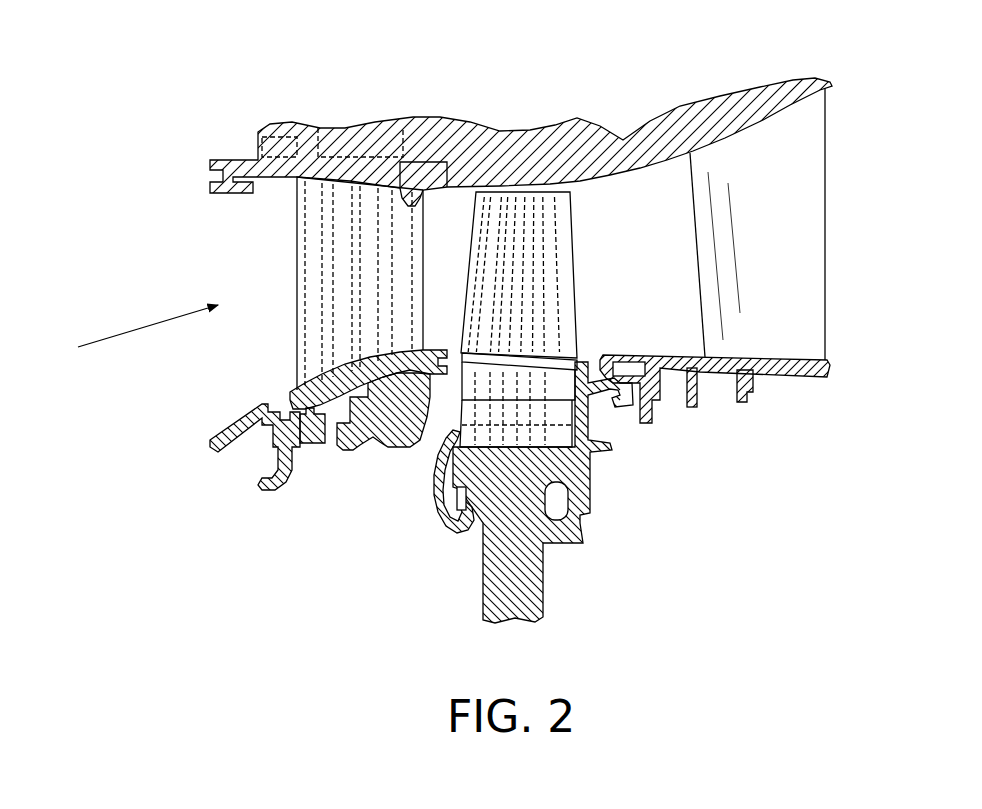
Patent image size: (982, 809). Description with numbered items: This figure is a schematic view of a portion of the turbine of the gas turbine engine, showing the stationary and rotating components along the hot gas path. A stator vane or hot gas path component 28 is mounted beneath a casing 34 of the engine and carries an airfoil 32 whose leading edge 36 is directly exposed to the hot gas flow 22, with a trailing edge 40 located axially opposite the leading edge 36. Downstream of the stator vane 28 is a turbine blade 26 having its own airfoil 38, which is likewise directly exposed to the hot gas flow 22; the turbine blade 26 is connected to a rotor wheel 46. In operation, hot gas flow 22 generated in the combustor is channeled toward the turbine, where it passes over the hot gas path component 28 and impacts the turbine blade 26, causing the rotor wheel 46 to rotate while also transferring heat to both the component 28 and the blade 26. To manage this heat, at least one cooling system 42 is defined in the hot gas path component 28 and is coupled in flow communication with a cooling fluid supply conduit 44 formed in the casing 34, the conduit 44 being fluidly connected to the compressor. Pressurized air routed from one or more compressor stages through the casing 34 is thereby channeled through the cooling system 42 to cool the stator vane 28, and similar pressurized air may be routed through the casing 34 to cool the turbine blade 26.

The hot gas flow 22 is at (127, 330).
The turbine blade 26 is at (586, 354).
The stator vane or hot gas path component 28 is at (292, 385).
The airfoil 32 is at (426, 196).
The casing 34 is at (340, 127).
The leading edge 36 is at (296, 212).
The airfoil 38 is at (572, 255).
The trailing edge 40 is at (423, 226).
The cooling system 42 is at (397, 192).
The cooling fluid supply conduit 44 is at (323, 460).
The rotor wheel 46 is at (543, 577).